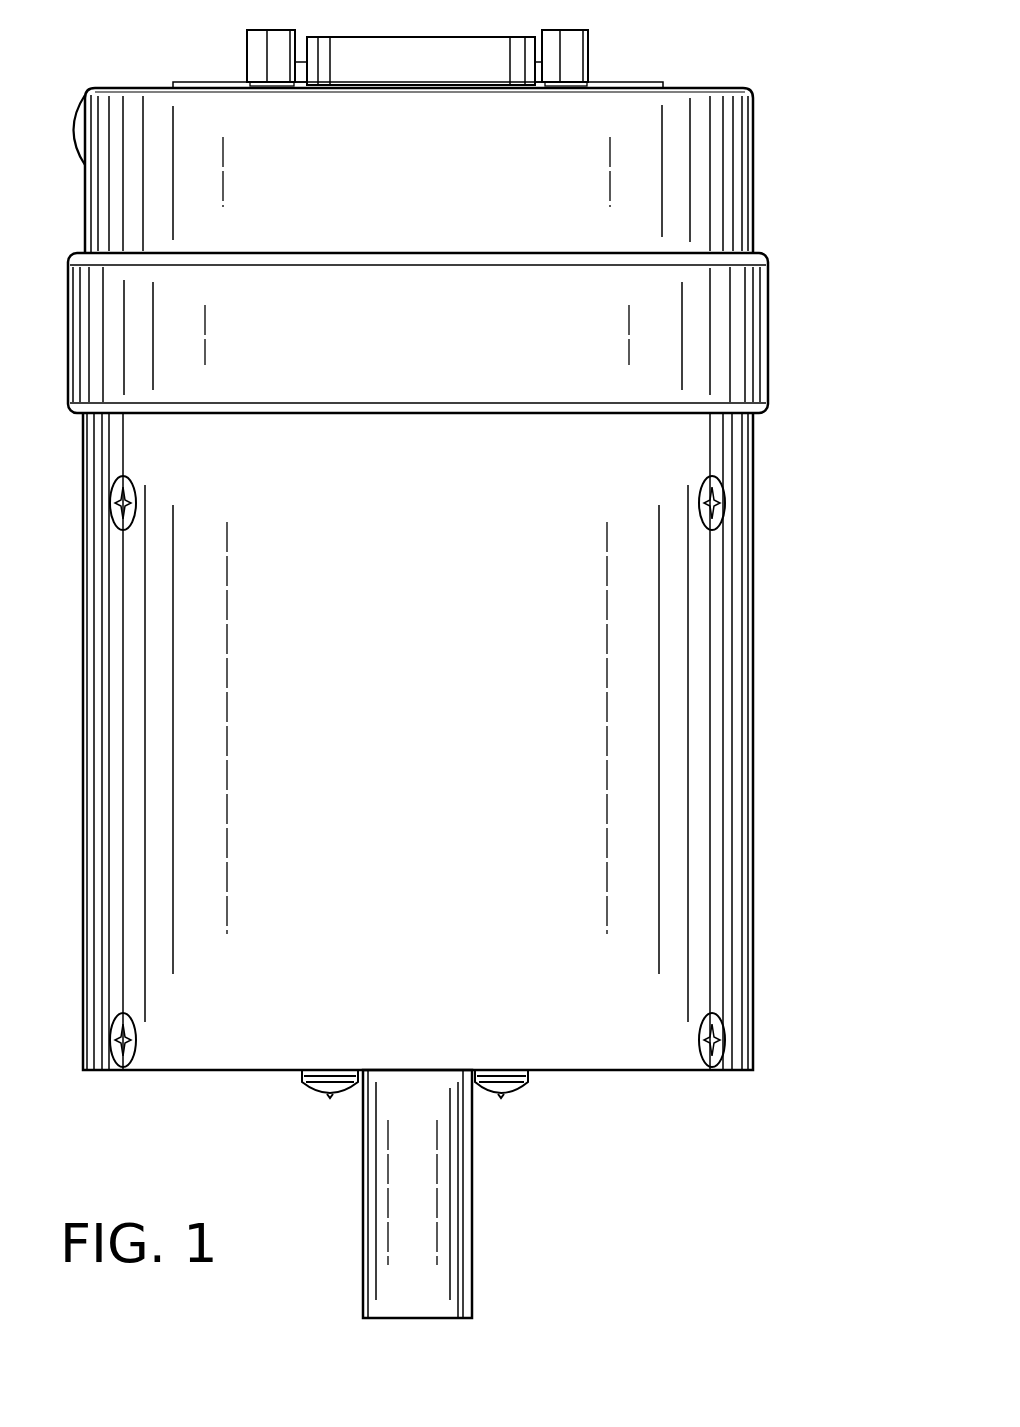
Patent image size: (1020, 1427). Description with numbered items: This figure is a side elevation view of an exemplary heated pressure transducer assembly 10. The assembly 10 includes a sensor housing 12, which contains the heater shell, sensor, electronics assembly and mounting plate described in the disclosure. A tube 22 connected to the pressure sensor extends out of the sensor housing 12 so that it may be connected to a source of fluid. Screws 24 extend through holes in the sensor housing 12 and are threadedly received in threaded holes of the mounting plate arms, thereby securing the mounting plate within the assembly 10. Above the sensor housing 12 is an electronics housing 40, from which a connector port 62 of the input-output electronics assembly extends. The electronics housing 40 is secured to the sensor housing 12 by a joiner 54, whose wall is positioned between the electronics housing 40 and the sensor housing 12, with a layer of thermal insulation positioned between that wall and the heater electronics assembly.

The heated pressure transducer assembly 10 is at (860, 258).
The sensor housing 12 is at (738, 832).
The tube 22 is at (453, 1215).
The screws 24 is at (125, 480).
The electronics housing 40 is at (730, 170).
The joiner 54 is at (90, 305).
The connector port 62 is at (445, 57).